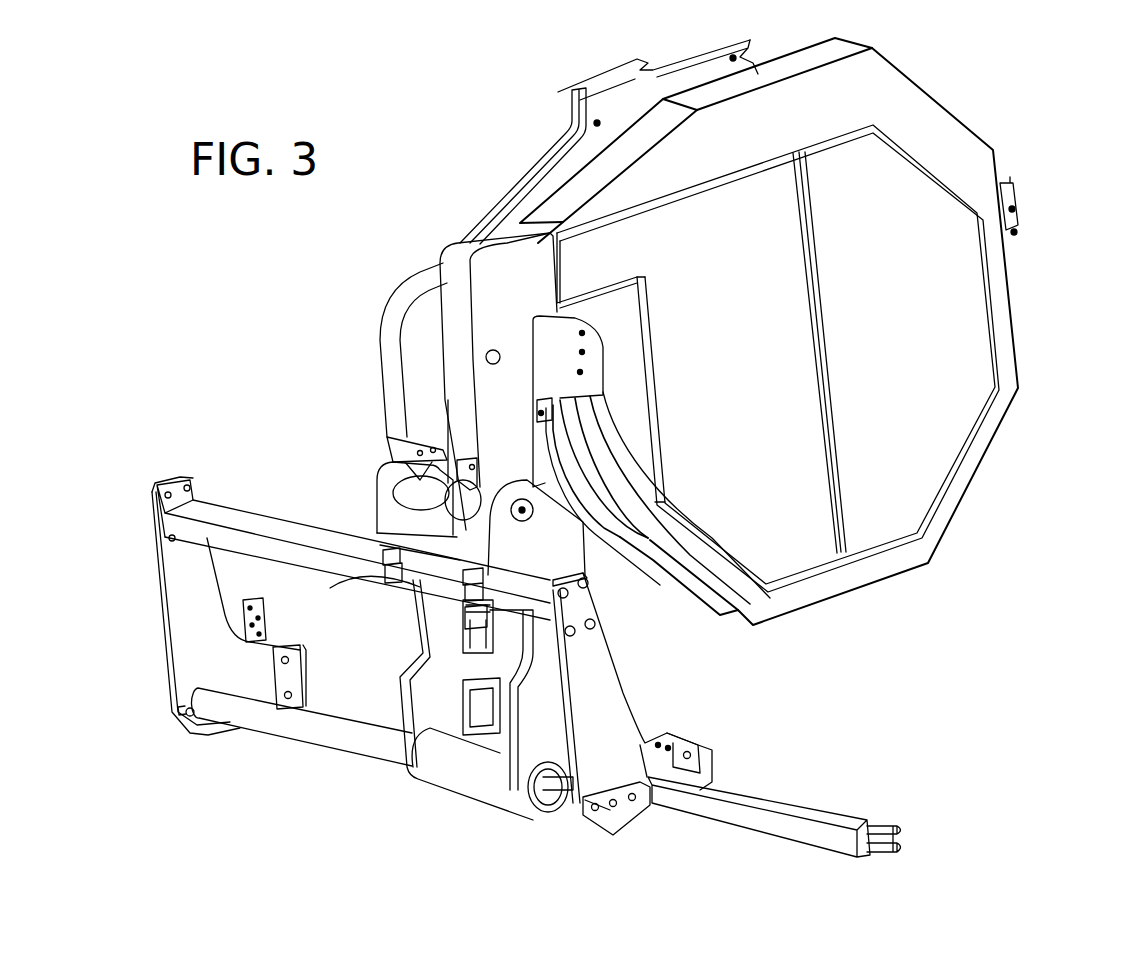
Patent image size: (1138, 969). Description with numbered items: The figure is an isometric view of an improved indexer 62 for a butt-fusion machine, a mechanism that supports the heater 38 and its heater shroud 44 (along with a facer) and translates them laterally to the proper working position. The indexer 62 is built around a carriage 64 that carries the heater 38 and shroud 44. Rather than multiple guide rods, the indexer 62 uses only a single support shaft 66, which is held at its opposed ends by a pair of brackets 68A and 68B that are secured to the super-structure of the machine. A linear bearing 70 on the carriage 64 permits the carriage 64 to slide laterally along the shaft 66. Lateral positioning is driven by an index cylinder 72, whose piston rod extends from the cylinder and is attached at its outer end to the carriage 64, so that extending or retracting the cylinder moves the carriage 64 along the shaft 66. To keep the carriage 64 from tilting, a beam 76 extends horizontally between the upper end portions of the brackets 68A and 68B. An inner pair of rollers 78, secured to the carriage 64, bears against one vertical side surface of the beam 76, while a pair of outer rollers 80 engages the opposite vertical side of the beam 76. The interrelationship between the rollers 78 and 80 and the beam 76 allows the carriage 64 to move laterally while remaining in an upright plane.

The heater shroud 44 is at (1003, 268).
The heater 38 is at (640, 490).
The beam 76 is at (263, 523).
The inner pair of rollers 78 is at (548, 579).
The pair of outer rollers 80 is at (462, 587).
The bracket 68A is at (180, 622).
The bracket 68B is at (605, 692).
The carriage 64 is at (420, 673).
The support shaft 66 is at (333, 737).
The linear bearing 70 is at (572, 817).
The index cylinder 72 is at (738, 815).
The indexer 62 is at (884, 672).